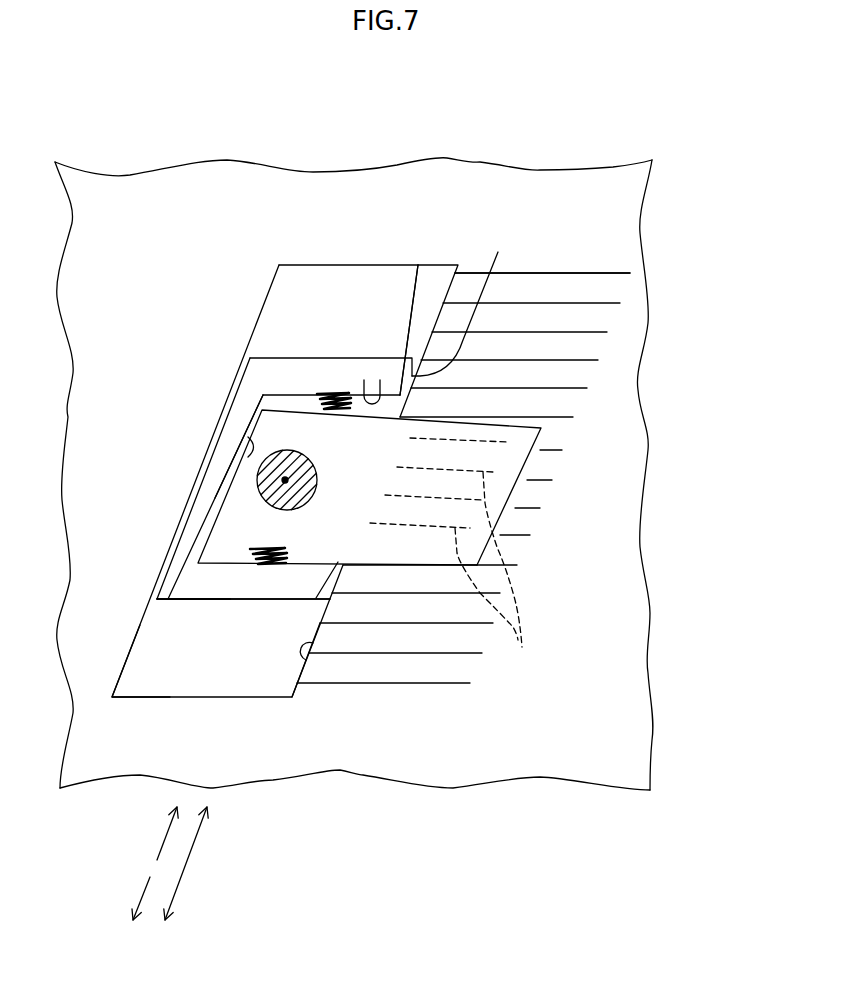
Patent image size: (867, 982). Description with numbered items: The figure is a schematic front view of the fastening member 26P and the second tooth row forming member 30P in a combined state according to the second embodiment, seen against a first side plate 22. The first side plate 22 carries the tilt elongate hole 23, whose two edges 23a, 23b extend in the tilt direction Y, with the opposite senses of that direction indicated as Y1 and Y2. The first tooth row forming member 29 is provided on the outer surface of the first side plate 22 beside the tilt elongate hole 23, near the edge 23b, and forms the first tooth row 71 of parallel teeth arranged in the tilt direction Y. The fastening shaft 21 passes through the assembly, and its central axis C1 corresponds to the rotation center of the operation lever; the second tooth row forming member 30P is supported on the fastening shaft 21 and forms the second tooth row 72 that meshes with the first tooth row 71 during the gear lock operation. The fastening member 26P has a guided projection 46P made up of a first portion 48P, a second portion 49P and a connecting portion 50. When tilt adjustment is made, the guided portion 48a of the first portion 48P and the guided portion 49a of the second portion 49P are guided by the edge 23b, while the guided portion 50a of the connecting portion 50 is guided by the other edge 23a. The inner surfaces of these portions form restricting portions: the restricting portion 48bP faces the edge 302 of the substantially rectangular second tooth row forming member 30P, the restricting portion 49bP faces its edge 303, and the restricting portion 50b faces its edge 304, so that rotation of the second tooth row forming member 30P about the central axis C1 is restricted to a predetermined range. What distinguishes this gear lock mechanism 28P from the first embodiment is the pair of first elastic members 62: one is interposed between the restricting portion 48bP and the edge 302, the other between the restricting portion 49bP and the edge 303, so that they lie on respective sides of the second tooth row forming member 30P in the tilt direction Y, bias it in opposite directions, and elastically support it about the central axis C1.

The first side plate 22 is at (486, 162).
The tilt elongate hole 23 is at (357, 264).
The edge of the tilt elongate hole 23a is at (130, 668).
The edge of the tilt elongate hole 23b is at (310, 655).
The guided portion 49a is at (340, 570).
The first tooth row 71 is at (568, 360).
The first tooth row forming member 29 is at (569, 272).
The gear lock mechanism 28P is at (580, 431).
The second tooth row 72 is at (456, 557).
The fastening shaft 21 is at (317, 473).
The central axis C1 is at (287, 483).
The guided portion 50a is at (188, 523).
The connecting portion 50 is at (213, 492).
The restricting portion 50b is at (253, 447).
The edge of the second tooth row forming member 304 is at (260, 423).
The guided projection 46P is at (288, 357).
The first portion 48P is at (342, 388).
The guided portion 48a is at (475, 301).
The restricting portion 48bP is at (418, 265).
The edge of the second tooth row forming member 302 is at (364, 382).
The first elastic member 62 is at (338, 413).
The second portion 49P is at (243, 580).
The restricting portion 49bP is at (318, 598).
The fastening member 26P is at (180, 601).
The edge of the second tooth row forming member 303 is at (213, 567).
The second tooth row forming member 30P is at (395, 567).
The tilt direction Y1 is at (160, 838).
The tilt direction Y2 is at (148, 880).
The tilt direction Y is at (188, 862).